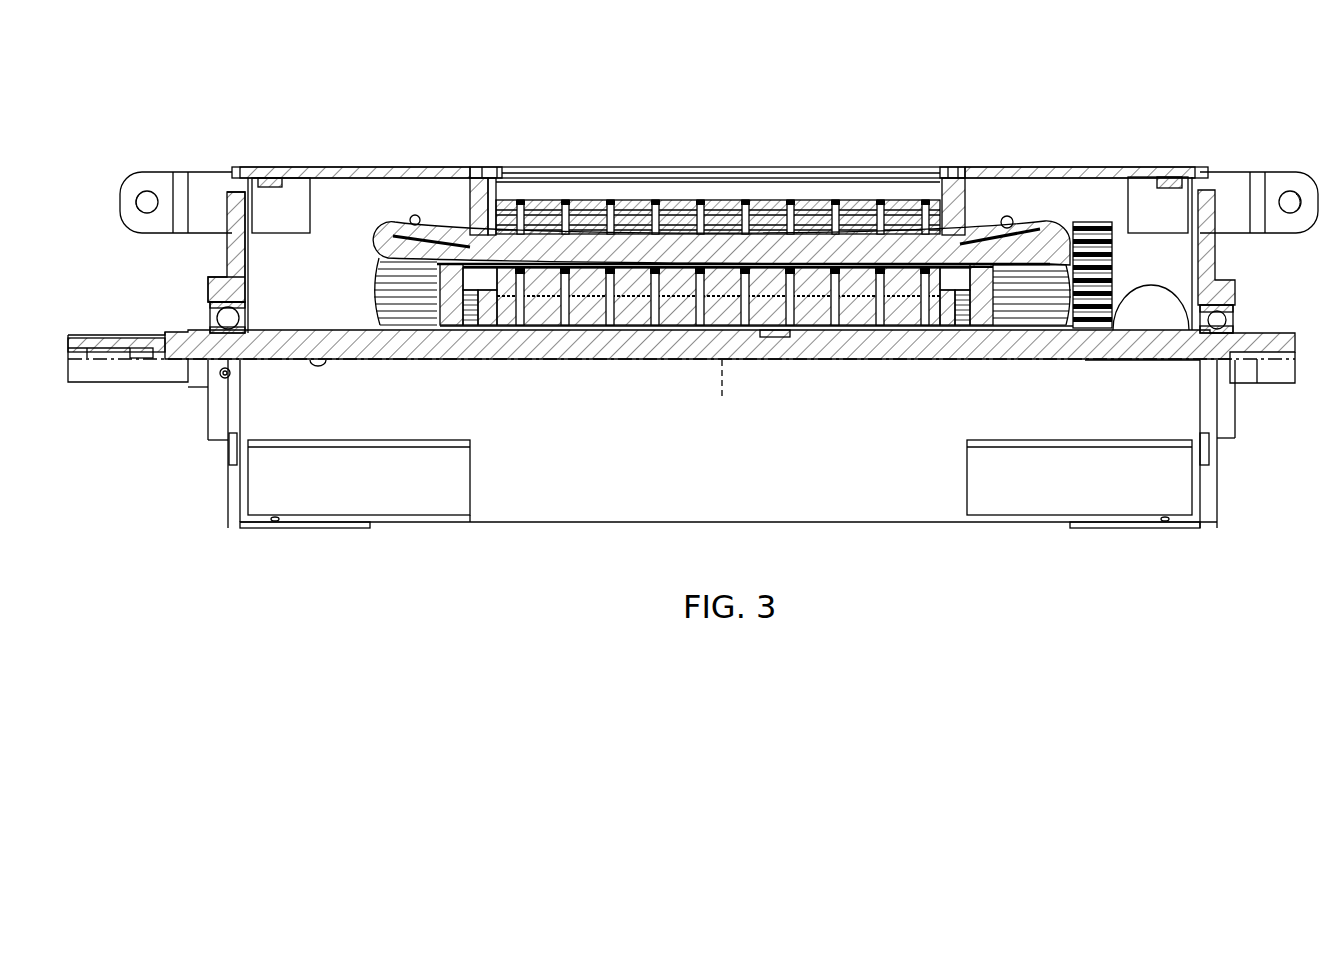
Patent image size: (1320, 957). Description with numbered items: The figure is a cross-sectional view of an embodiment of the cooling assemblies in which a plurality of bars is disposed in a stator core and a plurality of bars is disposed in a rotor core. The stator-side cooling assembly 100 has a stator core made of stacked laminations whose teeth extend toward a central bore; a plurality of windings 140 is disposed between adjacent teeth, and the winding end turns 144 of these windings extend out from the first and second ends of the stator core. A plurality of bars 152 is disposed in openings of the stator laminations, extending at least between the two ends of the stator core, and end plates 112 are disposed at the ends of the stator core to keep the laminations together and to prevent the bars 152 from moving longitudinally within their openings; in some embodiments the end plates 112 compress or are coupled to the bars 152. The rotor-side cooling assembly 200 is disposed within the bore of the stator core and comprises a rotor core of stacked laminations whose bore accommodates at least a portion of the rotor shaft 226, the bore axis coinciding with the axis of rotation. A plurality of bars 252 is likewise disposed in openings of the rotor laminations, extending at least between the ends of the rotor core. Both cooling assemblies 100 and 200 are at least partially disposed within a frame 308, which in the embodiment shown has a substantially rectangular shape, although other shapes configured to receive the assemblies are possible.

The cooling assembly 100 is at (997, 204).
The end plate 112 is at (474, 200).
The plurality of windings 140 is at (623, 243).
The winding end turns 144 is at (388, 230).
The bar 152 is at (718, 210).
The cooling assembly 200 is at (417, 298).
The rotor shaft 226 is at (107, 345).
The bar 252 is at (632, 274).
The frame 308 is at (262, 177).